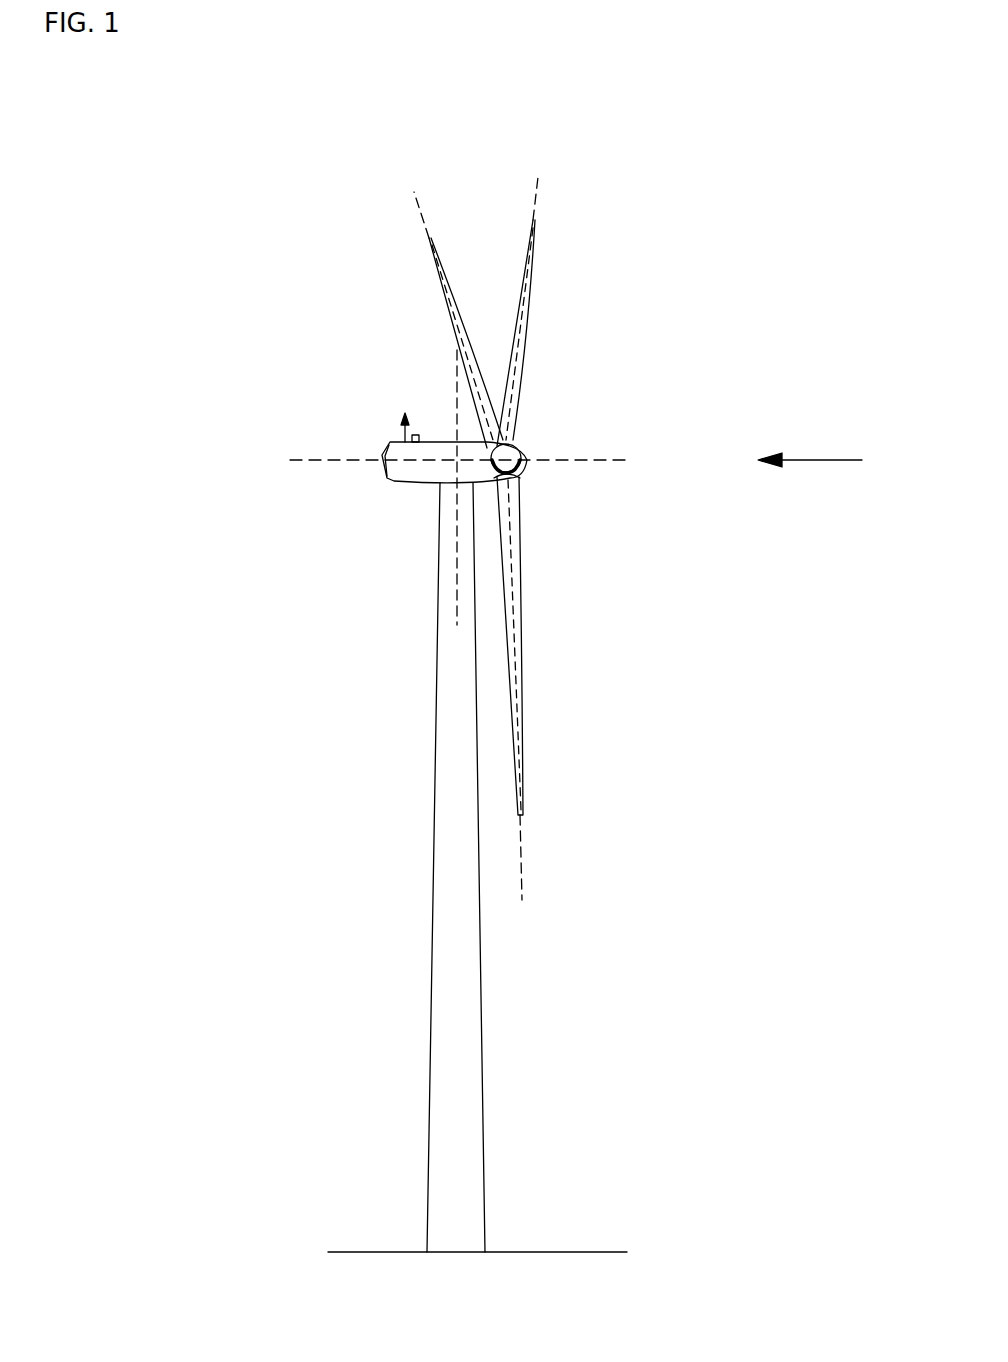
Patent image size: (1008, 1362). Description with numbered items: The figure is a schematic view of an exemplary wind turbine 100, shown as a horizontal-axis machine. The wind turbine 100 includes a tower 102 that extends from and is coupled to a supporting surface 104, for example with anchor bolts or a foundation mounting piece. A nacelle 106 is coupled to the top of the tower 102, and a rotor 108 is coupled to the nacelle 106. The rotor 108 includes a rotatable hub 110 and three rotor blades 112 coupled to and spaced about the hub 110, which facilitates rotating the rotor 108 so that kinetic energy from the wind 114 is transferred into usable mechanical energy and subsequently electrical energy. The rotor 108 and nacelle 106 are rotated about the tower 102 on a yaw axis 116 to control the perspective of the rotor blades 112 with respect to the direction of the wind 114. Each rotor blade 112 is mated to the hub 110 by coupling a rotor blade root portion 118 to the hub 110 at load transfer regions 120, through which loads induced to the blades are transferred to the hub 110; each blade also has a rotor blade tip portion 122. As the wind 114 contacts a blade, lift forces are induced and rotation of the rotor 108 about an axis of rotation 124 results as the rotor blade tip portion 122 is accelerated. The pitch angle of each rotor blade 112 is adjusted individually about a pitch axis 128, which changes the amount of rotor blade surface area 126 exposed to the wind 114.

The wind turbine 100 is at (215, 250).
The tower 102 is at (431, 1021).
The supporting surface 104 is at (386, 1250).
The nacelle 106 is at (410, 486).
The rotor 108 is at (511, 533).
The rotatable hub 110 is at (522, 455).
The rotor blades 112 is at (456, 338).
The wind 114 is at (830, 460).
The yaw axis 116 is at (456, 392).
The rotor blade root portion 118 is at (512, 540).
The load transfer regions 120 is at (515, 430).
The rotor blade tip portion 122 is at (436, 257).
The axis of rotation 124 is at (590, 462).
The rotor blade surface area 126 is at (520, 400).
The pitch axis 128 is at (417, 192).